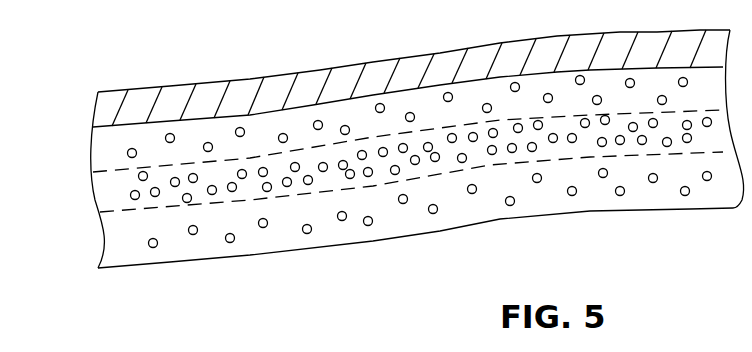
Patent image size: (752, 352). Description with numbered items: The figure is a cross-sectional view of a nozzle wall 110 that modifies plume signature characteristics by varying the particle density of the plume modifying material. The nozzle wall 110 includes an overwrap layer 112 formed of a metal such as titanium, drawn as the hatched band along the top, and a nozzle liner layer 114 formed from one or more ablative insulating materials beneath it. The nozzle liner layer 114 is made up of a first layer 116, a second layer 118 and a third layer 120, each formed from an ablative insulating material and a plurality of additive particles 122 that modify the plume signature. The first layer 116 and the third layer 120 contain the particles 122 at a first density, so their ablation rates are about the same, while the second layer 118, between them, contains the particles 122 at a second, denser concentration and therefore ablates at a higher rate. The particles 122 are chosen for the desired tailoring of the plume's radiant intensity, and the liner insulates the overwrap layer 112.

The nozzle wall 110 is at (112, 45).
The overwrap layer 112 is at (93, 118).
The nozzle liner layer 114 is at (118, 293).
The first layer 116 is at (92, 158).
The second layer 118 is at (100, 205).
The third layer 120 is at (105, 242).
The additive particles 122 is at (306, 234).